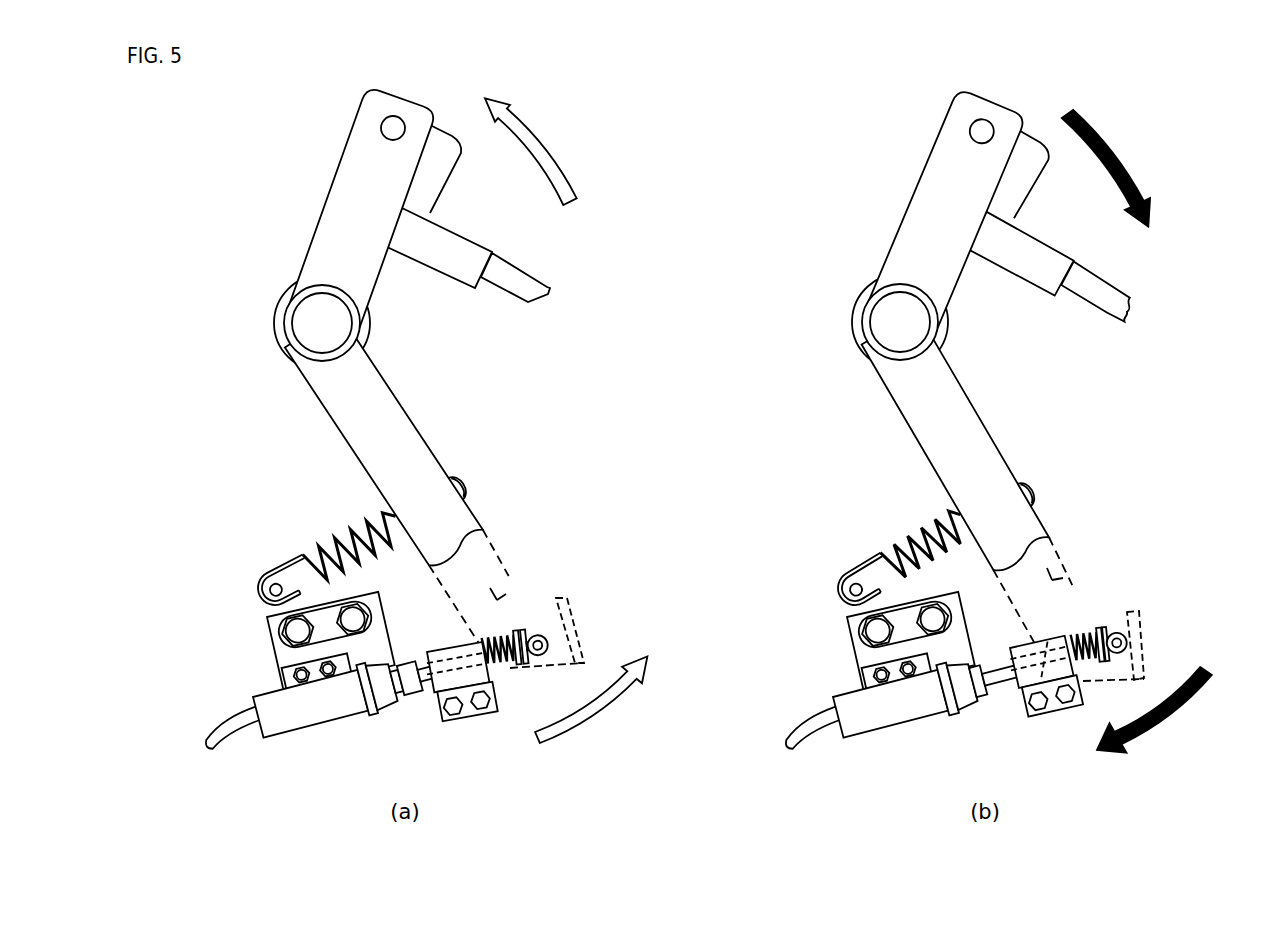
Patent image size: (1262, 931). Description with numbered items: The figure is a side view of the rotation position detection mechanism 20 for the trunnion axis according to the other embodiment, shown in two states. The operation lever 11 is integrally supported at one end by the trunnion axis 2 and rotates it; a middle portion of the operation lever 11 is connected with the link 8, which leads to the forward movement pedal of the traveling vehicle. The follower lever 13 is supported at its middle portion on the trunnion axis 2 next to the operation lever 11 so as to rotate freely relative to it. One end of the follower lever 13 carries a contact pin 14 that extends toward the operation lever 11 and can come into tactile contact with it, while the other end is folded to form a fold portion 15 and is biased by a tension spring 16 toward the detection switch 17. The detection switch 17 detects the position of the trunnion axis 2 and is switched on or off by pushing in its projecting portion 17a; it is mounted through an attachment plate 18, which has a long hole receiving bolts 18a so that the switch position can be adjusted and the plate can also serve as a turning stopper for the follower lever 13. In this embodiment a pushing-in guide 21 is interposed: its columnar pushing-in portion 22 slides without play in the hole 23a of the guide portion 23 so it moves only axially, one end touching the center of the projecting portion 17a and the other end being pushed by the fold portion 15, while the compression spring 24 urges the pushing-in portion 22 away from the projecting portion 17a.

The trunnion axis 2 is at (300, 323).
The link 8 is at (517, 290).
The operation lever 11 is at (442, 168).
The follower lever 13 is at (324, 413).
The contact pin 14 is at (384, 126).
The fold portion 15 is at (577, 600).
The tension spring 16 is at (283, 568).
The detection switch 17 is at (285, 723).
The projecting portion 17a is at (410, 690).
The attachment plate 18 is at (280, 657).
The bolts 18a is at (287, 628).
The rotation position detection mechanism 20 is at (614, 168).
The pushing-in guide 21 is at (500, 598).
The pushing-in portion 22 is at (537, 638).
The guide portion 23 is at (470, 713).
The hole 23a is at (455, 660).
The compression spring 24 is at (520, 670).